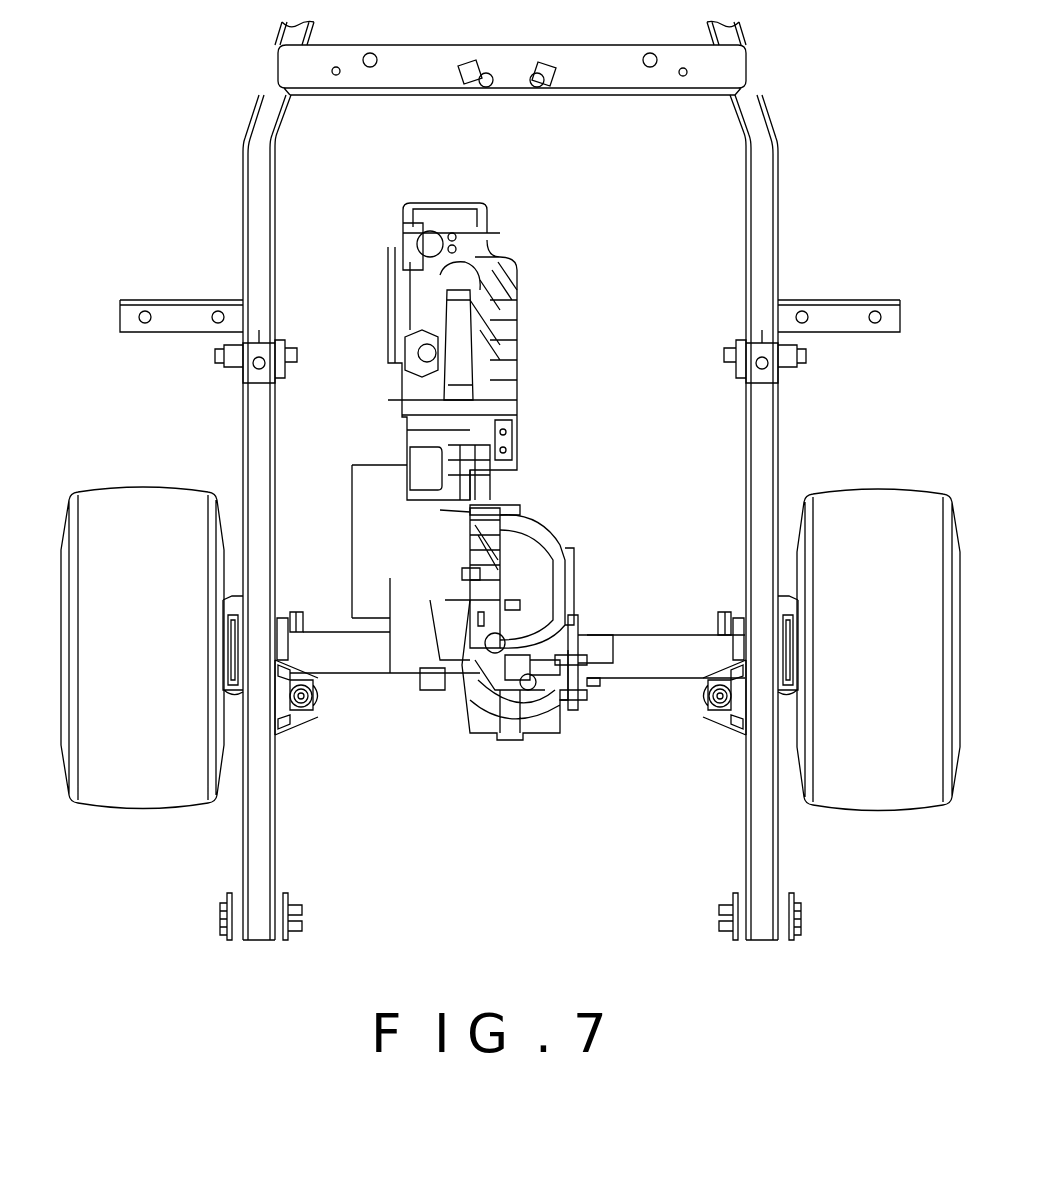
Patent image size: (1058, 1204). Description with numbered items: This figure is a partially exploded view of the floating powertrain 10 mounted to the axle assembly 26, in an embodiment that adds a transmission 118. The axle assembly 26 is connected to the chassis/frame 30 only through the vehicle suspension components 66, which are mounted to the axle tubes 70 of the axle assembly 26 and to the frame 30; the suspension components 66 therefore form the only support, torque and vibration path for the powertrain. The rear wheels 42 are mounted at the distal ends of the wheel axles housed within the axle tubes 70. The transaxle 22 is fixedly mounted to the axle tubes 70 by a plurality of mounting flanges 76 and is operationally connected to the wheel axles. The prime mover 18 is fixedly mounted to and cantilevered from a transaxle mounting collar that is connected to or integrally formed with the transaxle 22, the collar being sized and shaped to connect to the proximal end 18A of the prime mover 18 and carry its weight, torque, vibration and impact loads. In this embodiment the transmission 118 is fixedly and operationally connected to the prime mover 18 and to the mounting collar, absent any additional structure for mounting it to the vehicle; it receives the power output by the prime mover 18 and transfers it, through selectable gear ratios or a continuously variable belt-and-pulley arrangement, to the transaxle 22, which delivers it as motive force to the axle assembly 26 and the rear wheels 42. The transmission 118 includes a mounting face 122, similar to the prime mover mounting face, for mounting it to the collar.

The floating powertrain 10 is at (652, 265).
The prime mover 18 is at (418, 385).
The proximal end of the prime mover 18A is at (483, 498).
The transaxle 22 is at (557, 582).
The axle assembly 26 is at (352, 696).
The chassis/frame 30 is at (262, 165).
The rear wheels 42 is at (122, 508).
The vehicle suspension components 66 is at (325, 712).
The axle tube 70 is at (352, 668).
The mounting flanges 76 is at (600, 637).
The transmission 118 is at (383, 483).
The transmission mounting face 122 is at (470, 568).